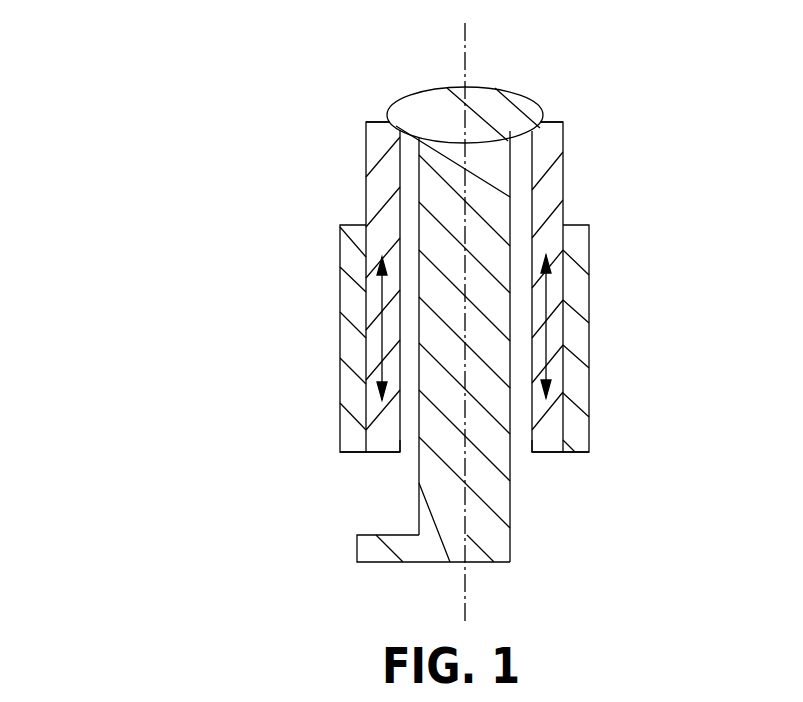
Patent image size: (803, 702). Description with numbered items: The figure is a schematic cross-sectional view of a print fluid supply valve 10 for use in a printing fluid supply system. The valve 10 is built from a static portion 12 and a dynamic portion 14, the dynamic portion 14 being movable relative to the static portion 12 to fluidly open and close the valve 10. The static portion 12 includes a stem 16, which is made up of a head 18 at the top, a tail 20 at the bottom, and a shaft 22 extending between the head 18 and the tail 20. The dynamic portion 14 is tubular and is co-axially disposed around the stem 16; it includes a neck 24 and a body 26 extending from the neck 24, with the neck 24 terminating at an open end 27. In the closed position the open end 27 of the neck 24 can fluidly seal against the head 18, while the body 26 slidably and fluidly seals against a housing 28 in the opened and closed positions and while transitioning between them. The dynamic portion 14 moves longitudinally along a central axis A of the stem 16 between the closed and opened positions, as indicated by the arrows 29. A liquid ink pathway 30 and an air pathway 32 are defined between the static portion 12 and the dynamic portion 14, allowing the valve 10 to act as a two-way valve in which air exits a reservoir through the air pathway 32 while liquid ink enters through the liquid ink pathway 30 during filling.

The print fluid supply valve 10 is at (240, 80).
The static portion 12 is at (398, 95).
The dynamic portion 14 is at (572, 150).
The stem 16 is at (513, 511).
The head 18 is at (503, 118).
The tail 20 is at (440, 553).
The shaft 22 is at (443, 493).
The neck 24 is at (366, 177).
The body 26 is at (388, 422).
The open end 27 is at (553, 120).
The housing 28 is at (353, 300).
The arrows 29 is at (382, 348).
The liquid ink pathway 30 is at (412, 440).
The air pathway 32 is at (517, 440).
The central axis A is at (463, 52).